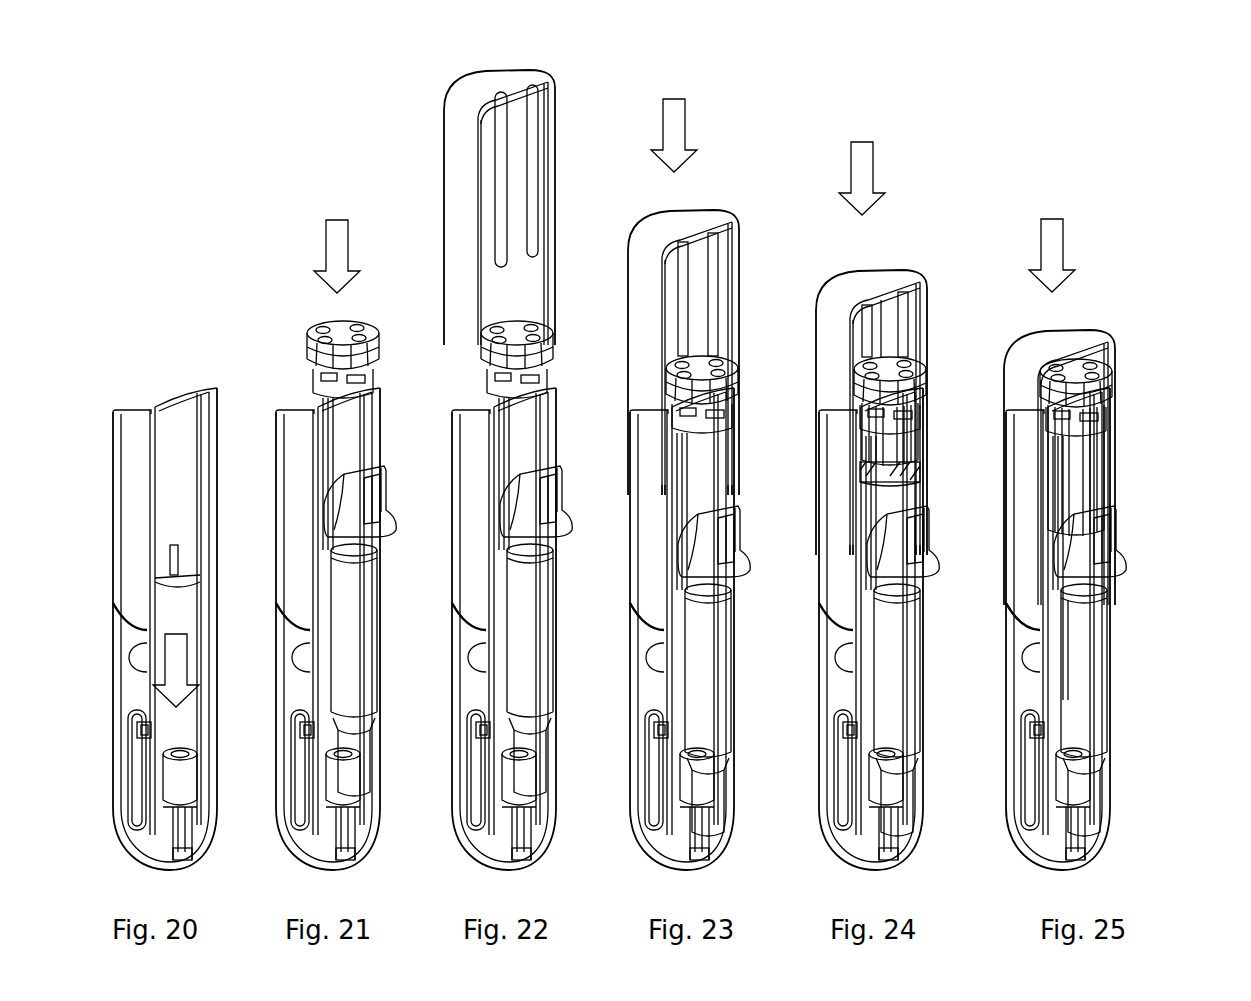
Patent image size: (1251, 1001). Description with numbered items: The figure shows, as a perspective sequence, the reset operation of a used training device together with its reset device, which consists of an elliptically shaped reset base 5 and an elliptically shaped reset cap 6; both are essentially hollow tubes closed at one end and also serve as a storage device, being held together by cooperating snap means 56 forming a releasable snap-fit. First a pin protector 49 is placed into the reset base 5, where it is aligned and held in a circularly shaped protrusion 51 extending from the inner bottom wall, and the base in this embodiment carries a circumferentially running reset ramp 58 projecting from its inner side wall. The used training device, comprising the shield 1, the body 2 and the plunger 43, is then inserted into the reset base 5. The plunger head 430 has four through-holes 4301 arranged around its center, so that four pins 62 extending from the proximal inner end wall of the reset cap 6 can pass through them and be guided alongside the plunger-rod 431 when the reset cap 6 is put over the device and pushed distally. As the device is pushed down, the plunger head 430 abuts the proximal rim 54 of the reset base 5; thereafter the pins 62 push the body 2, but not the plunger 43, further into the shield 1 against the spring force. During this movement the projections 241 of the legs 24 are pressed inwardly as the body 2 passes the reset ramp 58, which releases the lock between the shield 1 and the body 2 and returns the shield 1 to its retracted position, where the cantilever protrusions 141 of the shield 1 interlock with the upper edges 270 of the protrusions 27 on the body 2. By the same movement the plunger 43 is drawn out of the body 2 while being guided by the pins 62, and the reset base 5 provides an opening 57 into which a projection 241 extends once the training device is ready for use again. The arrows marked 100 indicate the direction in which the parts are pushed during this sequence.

In FIG. 24, the shield 1 is at (888, 720).
In FIG. 25, the shield 1 is at (1092, 685).
In FIG. 24, the body 2 is at (873, 523).
In FIG. 25, the body 2 is at (1107, 600).
In FIG. 20, the reset base 5 is at (130, 502).
In FIG. 22, the reset cap 6 is at (458, 215).
In FIG. 25, the reset cap 6 is at (1043, 345).
In FIG. 25, the legs 24 is at (1058, 697).
In FIG. 24, the protrusions 27 is at (923, 483).
In FIG. 24, the plunger 43 is at (873, 427).
In FIG. 25, the plunger 43 is at (1087, 438).
In FIG. 20, the pin protector 49 is at (173, 777).
In FIG. 20, the circularly shaped protrusion 51 is at (198, 857).
In FIG. 22, the proximal rim 54 is at (487, 403).
In FIG. 25, the snap means 56 is at (1040, 627).
In FIG. 25, the opening 57 is at (1057, 727).
In FIG. 20, the reset ramp 58 is at (193, 570).
In FIG. 22, the pins 62 is at (532, 227).
In FIG. 23, the pins 62 is at (688, 347).
In FIG. 20, the autoinjector 100 is at (147, 660).
In FIG. 21, the autoinjector 100 is at (335, 238).
In FIG. 23, the autoinjector 100 is at (673, 123).
In FIG. 24, the autoinjector 100 is at (850, 175).
In FIG. 25, the autoinjector 100 is at (1040, 245).
In FIG. 25, the protrusions 141 is at (1060, 547).
In FIG. 23, the projections 241 is at (680, 597).
In FIG. 24, the projections 241 is at (857, 630).
In FIG. 25, the upper edges 270 is at (1098, 540).
In FIG. 21, the plunger head 430 is at (313, 337).
In FIG. 24, the plunger-rod 431 is at (913, 423).
In FIG. 21, the through-holes 4301 is at (353, 327).
In FIG. 22, the through-holes 4301 is at (530, 320).